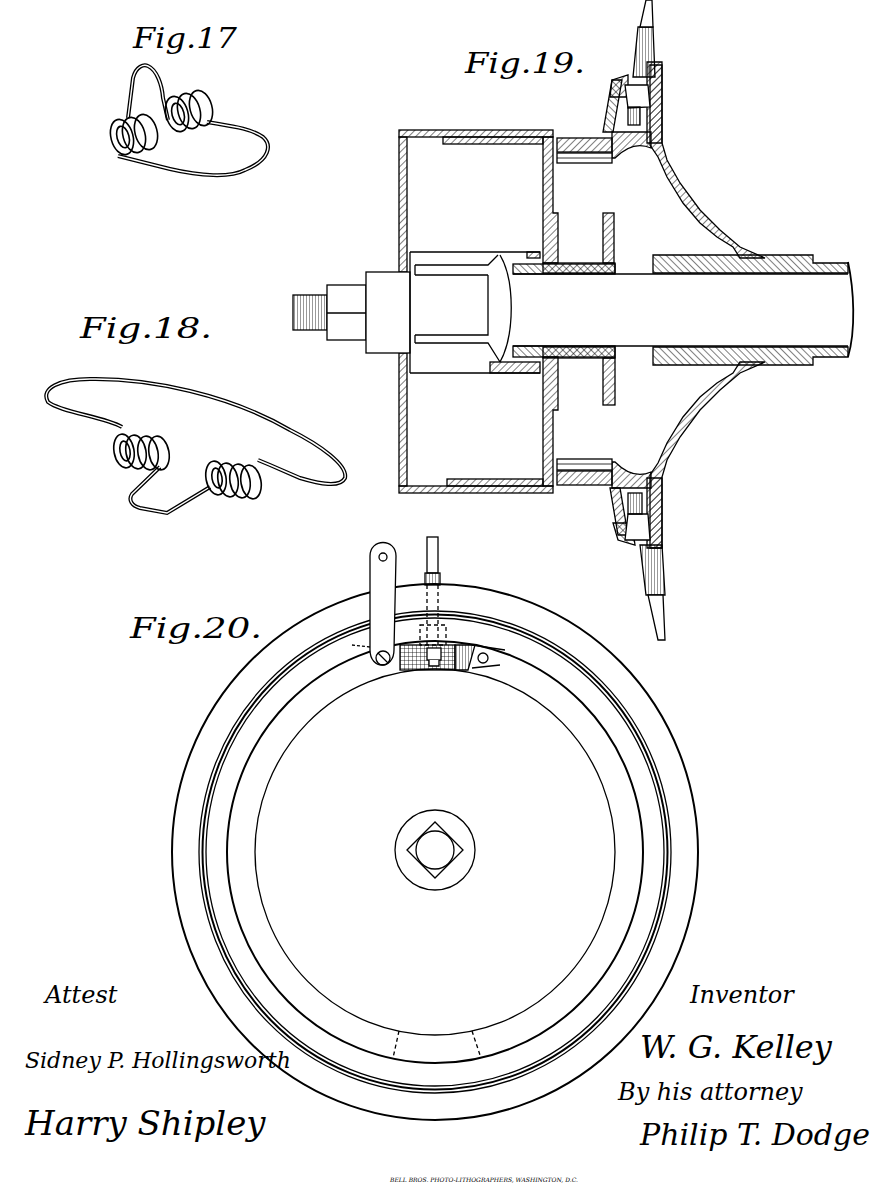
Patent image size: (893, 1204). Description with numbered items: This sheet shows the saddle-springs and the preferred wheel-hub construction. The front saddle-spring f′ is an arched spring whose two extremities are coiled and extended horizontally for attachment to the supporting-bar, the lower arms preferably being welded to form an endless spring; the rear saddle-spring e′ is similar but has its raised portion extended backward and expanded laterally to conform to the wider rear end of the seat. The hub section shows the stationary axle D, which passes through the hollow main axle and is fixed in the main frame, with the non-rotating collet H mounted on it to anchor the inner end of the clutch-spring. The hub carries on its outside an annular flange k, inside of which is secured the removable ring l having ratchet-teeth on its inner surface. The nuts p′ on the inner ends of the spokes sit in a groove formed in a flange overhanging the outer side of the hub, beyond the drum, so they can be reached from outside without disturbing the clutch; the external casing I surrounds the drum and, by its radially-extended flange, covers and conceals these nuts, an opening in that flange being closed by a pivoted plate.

In FIG. 17, the front saddle-spring f′ is at (187, 120).
In FIG. 18, the rear saddle-spring e′ is at (195, 446).
In FIG. 19, the casing I is at (507, 311).
In FIG. 20, the casing I is at (435, 852).
In FIG. 19, the collet H is at (416, 312).
In FIG. 19, the stationary axle D is at (683, 310).
In FIG. 19, the annular flange k is at (568, 122).
In FIG. 19, the removable ring l is at (583, 155).
In FIG. 19, the nuts p′ is at (645, 320).
In FIG. 20, the nuts p′ is at (450, 643).